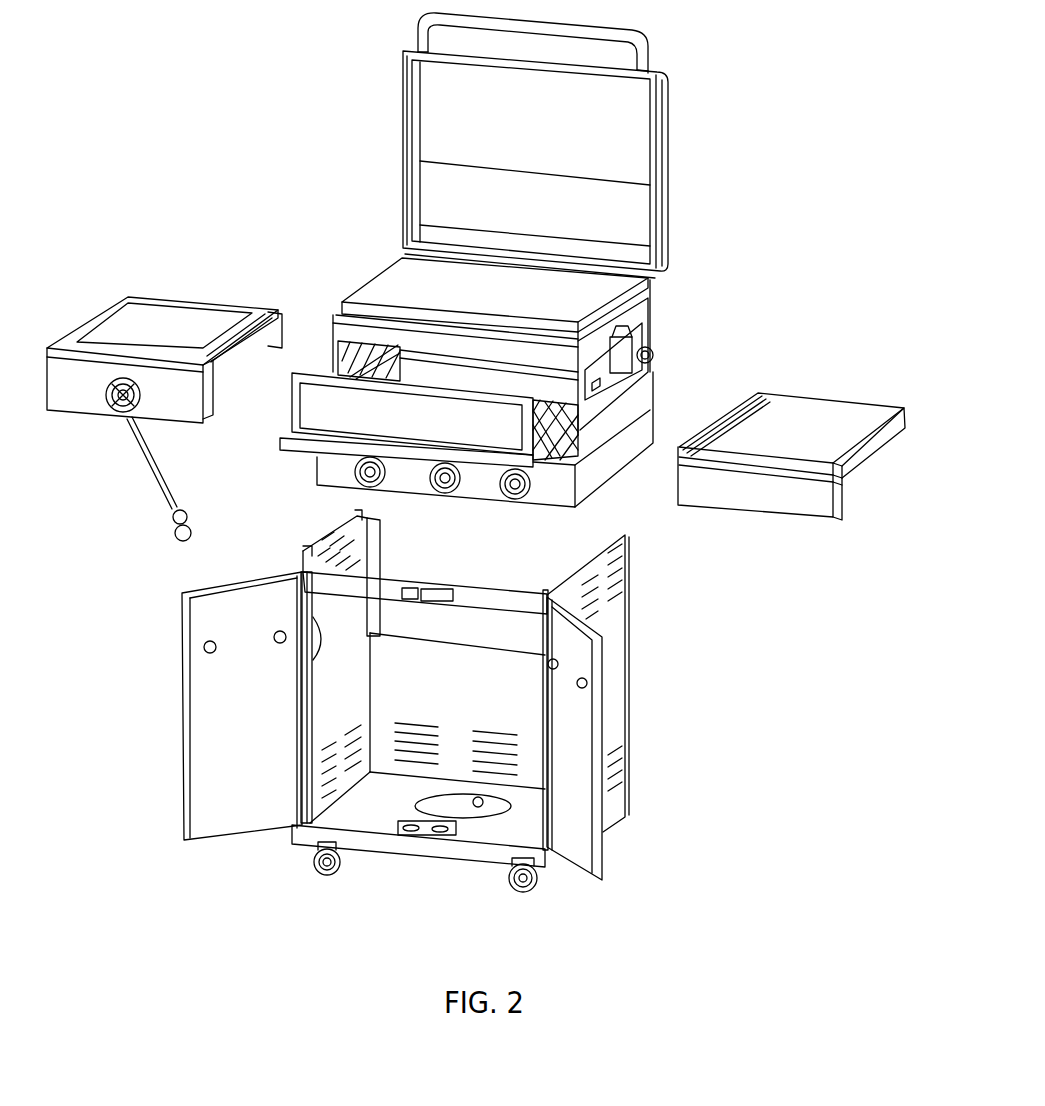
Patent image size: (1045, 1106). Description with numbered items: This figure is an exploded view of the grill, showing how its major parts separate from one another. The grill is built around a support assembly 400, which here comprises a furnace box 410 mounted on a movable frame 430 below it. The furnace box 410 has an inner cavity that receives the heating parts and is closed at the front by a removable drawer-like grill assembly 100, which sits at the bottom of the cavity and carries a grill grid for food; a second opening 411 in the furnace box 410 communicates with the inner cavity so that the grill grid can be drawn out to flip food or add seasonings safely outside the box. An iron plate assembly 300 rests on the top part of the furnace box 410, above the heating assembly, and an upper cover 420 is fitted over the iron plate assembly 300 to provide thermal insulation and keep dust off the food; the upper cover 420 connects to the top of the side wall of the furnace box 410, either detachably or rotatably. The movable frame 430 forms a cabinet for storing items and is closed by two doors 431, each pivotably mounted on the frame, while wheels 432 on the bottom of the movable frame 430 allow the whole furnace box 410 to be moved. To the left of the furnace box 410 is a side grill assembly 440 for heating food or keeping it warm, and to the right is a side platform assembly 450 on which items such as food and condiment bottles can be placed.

The grill assembly 100 is at (554, 455).
The iron plate assembly 300 is at (596, 297).
The support assembly 400 is at (865, 203).
The furnace box 410 is at (480, 325).
The second opening 411 is at (414, 354).
The upper cover 420 is at (670, 149).
The movable frame 430 is at (410, 736).
The doors 431 is at (178, 715).
The wheels 432 is at (532, 899).
The side grill assembly 440 is at (178, 322).
The side platform assembly 450 is at (789, 414).